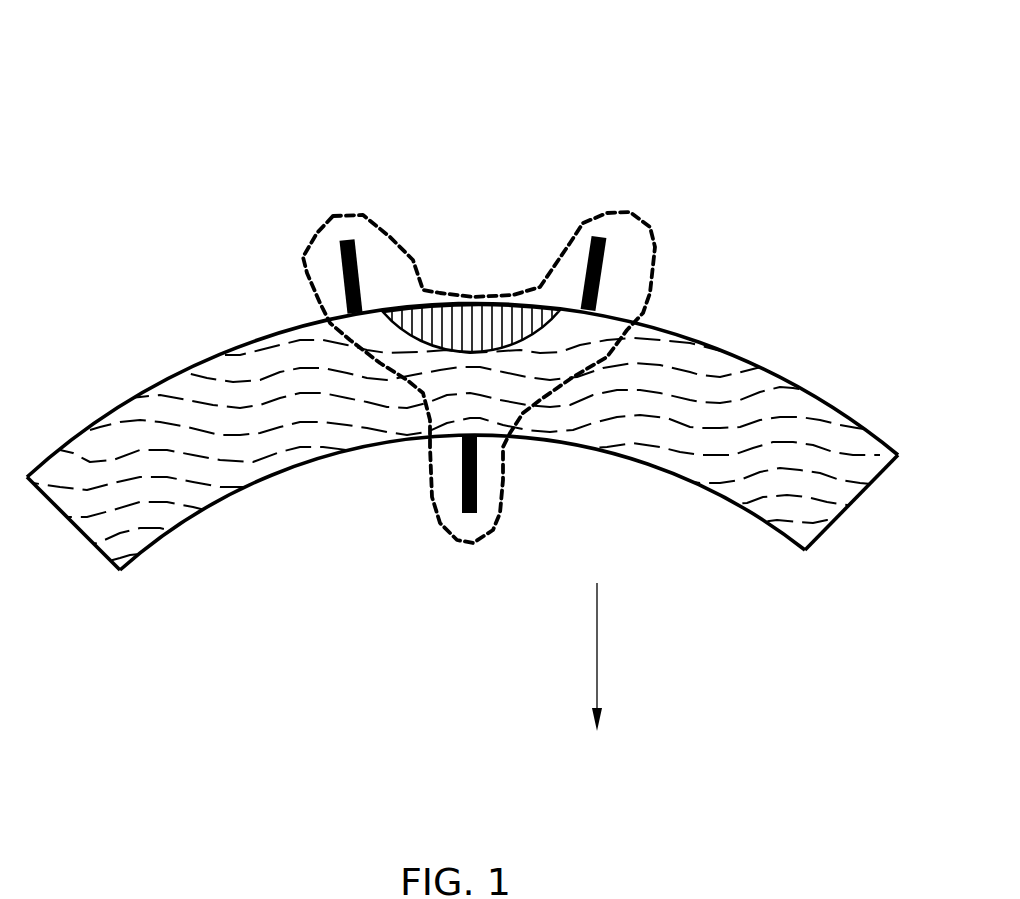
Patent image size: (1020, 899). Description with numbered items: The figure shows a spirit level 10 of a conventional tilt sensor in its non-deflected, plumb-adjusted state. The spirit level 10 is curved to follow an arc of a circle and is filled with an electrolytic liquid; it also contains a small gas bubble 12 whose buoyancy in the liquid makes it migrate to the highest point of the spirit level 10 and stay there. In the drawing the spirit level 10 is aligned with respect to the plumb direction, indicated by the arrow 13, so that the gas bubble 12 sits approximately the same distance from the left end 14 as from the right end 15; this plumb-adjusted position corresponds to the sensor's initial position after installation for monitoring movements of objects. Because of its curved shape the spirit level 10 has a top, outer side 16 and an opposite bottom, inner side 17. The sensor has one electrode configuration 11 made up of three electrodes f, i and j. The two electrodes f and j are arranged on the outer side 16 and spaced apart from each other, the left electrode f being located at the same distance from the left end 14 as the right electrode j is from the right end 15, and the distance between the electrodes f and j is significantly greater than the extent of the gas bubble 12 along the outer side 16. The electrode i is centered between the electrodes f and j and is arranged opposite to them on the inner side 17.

The spirit level 10 is at (732, 118).
The electrode configuration 11 is at (380, 258).
The gas bubble 12 is at (467, 330).
The arrow 13 is at (597, 635).
The left end 14 is at (90, 552).
The right end 15 is at (847, 510).
The outer side 16 is at (718, 347).
The inner side 17 is at (673, 476).
The left electrode f is at (340, 237).
The right electrode j is at (603, 240).
The electrode i is at (468, 517).